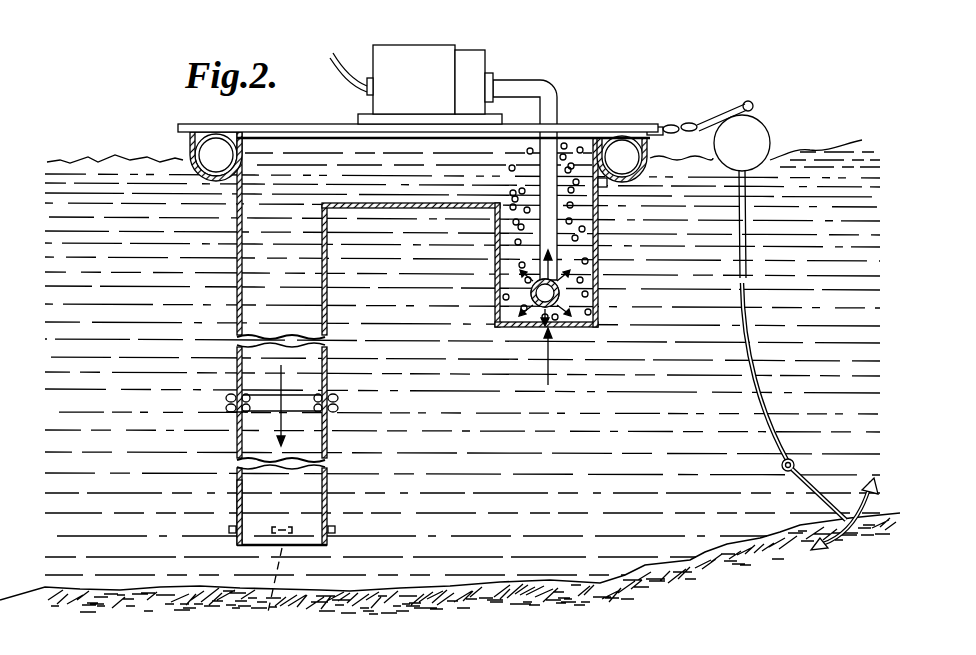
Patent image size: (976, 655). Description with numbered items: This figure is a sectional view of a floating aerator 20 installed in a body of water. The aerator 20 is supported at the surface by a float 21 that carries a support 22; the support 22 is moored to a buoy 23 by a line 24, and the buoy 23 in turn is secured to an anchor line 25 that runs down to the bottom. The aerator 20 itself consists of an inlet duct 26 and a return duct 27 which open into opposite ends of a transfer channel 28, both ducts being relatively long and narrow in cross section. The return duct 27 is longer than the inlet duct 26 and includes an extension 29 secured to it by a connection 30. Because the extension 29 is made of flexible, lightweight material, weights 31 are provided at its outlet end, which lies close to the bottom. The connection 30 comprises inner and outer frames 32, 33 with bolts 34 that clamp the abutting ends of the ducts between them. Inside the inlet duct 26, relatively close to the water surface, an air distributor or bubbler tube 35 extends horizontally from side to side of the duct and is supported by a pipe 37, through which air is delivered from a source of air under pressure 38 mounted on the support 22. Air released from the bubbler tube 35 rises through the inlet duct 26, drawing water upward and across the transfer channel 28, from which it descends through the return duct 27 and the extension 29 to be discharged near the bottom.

The aerator 20 is at (274, 144).
The float 21 is at (185, 152).
The support 22 is at (582, 122).
The buoy 23 is at (760, 134).
The line 24 is at (712, 118).
The anchor line 25 is at (742, 248).
The inlet duct 26 is at (497, 306).
The return duct 27 is at (237, 284).
The transfer channel 28 is at (347, 147).
The extension 29 is at (237, 503).
The connection 30 is at (220, 405).
The weights 31 is at (233, 536).
The inner frame 32 is at (314, 401).
The outer frame 33 is at (337, 406).
The bolts 34 is at (232, 413).
The air distributor or bubbler tube 35 is at (553, 306).
The pipe 37 is at (557, 97).
The source of air under pressure 38 is at (421, 62).